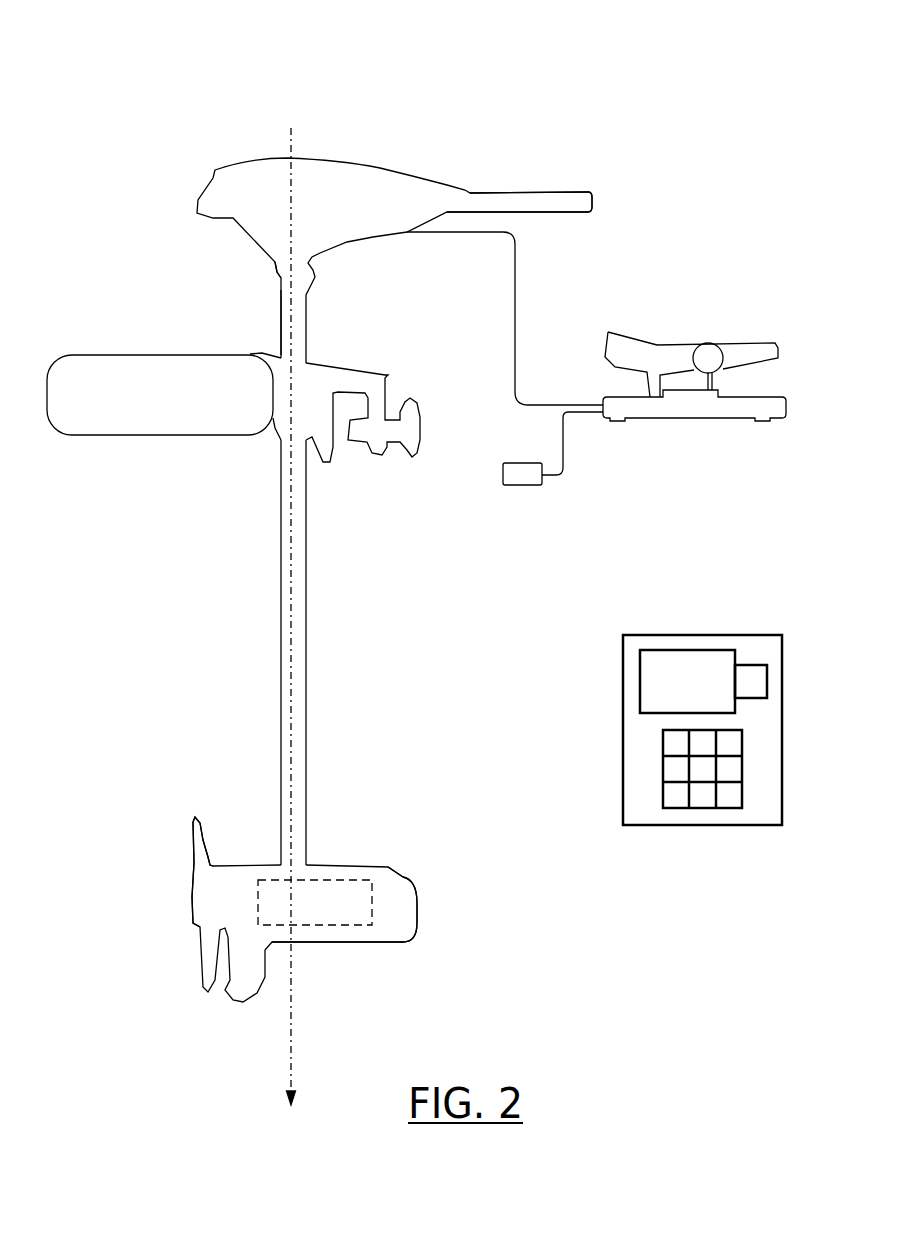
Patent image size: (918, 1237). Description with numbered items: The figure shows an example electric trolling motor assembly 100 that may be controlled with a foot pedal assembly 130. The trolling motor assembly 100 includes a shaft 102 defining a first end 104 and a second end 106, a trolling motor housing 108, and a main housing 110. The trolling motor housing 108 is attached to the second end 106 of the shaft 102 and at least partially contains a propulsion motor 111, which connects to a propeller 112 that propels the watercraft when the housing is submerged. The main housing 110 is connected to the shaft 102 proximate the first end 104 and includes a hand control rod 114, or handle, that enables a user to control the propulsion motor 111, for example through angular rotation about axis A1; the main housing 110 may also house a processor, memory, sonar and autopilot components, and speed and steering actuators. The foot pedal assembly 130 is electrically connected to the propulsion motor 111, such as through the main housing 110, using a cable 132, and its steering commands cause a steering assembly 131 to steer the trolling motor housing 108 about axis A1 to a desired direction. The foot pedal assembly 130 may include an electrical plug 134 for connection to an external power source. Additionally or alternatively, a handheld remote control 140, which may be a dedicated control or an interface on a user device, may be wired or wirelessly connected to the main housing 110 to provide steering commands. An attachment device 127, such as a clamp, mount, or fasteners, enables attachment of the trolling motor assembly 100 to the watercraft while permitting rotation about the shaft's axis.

The trolling motor assembly 100 is at (690, 82).
The shaft 102 is at (272, 574).
The first end 104 is at (267, 282).
The second end 106 is at (323, 844).
The trolling motor housing 108 is at (357, 956).
The main housing 110 is at (243, 160).
The propulsion motor 111 is at (373, 890).
The propeller 112 is at (186, 848).
The hand control rod 114 is at (583, 224).
The attachment device 127 is at (371, 466).
The foot pedal assembly 130 is at (736, 426).
The steering assembly 131 is at (98, 442).
The cable 132 is at (506, 305).
The electrical plug 134 is at (521, 500).
The handheld remote control 140 is at (742, 829).
The axis A1 is at (292, 602).